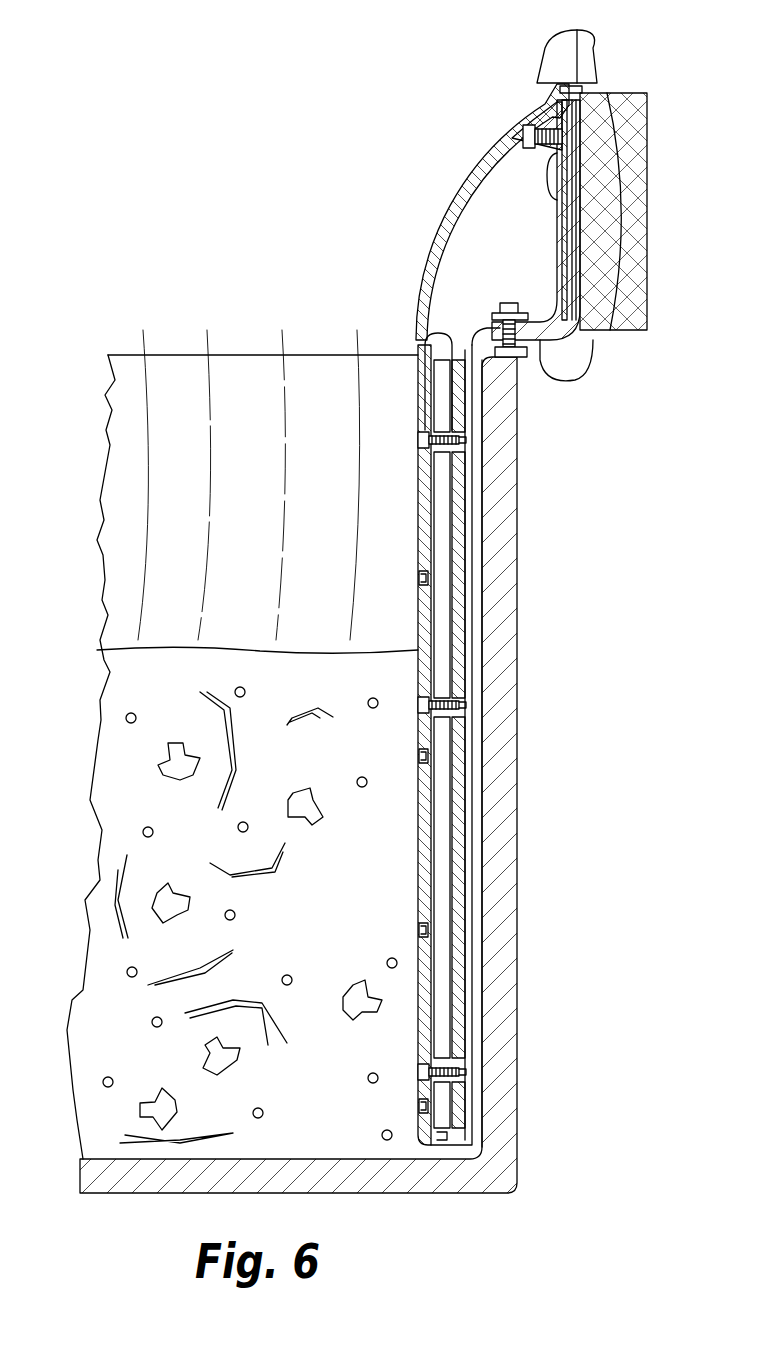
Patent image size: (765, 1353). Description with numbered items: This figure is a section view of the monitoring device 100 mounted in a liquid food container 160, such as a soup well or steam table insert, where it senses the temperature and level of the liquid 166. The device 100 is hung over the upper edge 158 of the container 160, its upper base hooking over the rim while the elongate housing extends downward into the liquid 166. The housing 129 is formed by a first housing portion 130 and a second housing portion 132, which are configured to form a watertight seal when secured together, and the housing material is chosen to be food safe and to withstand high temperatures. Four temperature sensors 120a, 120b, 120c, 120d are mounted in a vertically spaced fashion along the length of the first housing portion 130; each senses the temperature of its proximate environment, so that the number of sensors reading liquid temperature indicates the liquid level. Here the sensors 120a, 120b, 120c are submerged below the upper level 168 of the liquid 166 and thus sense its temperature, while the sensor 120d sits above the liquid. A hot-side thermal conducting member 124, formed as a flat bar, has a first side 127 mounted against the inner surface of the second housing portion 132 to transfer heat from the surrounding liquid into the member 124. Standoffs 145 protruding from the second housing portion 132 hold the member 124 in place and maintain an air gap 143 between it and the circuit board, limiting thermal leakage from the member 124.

The monitoring device 100 is at (463, 187).
The upper edge 158 is at (517, 375).
The container 160 is at (515, 808).
The temperature sensor 120a is at (419, 1106).
The temperature sensor 120b is at (419, 930).
The temperature sensor 120c is at (419, 755).
The temperature sensor 120d is at (418, 578).
The standoff 145 is at (448, 702).
The air gap 143 is at (445, 838).
The hot-side thermal conducting member 124 is at (458, 868).
The first housing portion 130 is at (418, 891).
The first side 127 is at (453, 900).
The second housing portion 132 is at (473, 958).
The housing 129 is at (440, 1046).
The liquid 166 is at (165, 695).
The upper level 168 is at (237, 652).